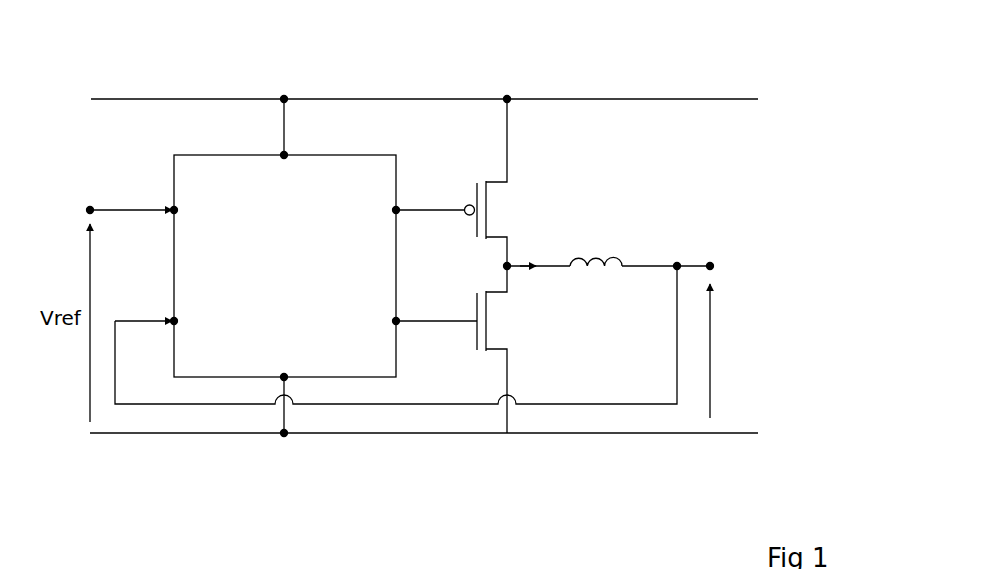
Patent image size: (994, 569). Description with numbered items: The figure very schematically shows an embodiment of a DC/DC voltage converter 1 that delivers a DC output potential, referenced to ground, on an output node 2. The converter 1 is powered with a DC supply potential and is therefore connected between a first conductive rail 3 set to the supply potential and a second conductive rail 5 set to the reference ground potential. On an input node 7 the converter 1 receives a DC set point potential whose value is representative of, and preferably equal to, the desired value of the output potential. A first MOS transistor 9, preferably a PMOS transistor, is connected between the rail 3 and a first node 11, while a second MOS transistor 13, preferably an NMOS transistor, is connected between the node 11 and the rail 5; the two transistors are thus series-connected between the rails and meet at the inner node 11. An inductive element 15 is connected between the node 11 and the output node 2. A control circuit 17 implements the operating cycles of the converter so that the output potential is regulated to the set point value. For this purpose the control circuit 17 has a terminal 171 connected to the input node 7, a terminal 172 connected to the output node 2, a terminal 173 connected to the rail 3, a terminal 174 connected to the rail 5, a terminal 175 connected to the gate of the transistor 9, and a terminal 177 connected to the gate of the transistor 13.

The DC/DC voltage converter 1 is at (716, 57).
The output node 2 is at (712, 263).
The first conductive rail 3 is at (756, 99).
The second conductive rail 5 is at (720, 433).
The input node 7 is at (90, 207).
The first MOS transistor 9 is at (500, 194).
The first node 11 is at (510, 264).
The second MOS transistor 13 is at (498, 327).
The inductive element 15 is at (598, 256).
The control circuit 17 is at (285, 266).
The terminal 171 is at (177, 212).
The terminal 172 is at (177, 323).
The terminal 173 is at (284, 158).
The terminal 174 is at (284, 374).
The terminal 175 is at (394, 212).
The terminal 177 is at (394, 319).